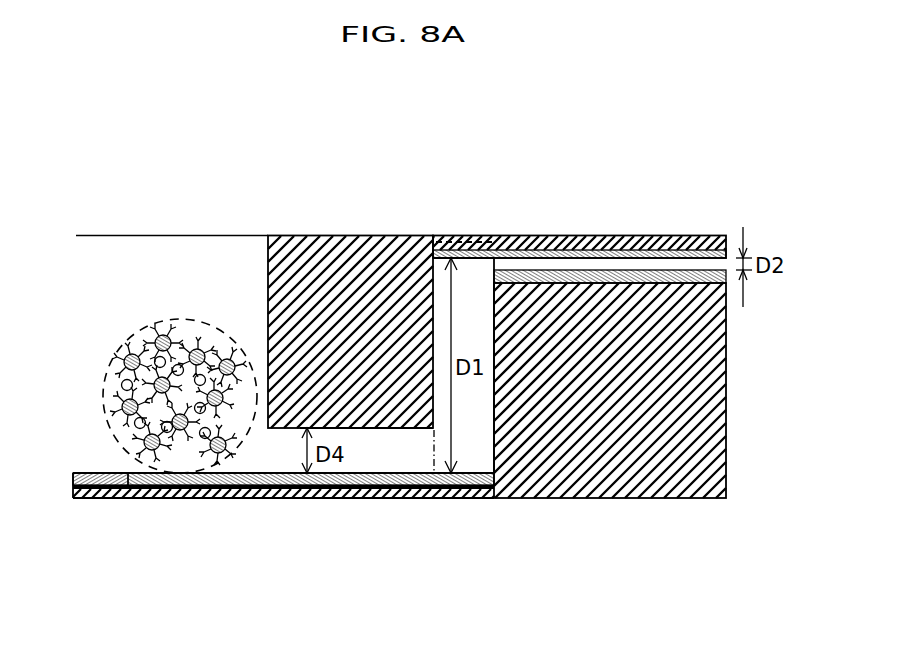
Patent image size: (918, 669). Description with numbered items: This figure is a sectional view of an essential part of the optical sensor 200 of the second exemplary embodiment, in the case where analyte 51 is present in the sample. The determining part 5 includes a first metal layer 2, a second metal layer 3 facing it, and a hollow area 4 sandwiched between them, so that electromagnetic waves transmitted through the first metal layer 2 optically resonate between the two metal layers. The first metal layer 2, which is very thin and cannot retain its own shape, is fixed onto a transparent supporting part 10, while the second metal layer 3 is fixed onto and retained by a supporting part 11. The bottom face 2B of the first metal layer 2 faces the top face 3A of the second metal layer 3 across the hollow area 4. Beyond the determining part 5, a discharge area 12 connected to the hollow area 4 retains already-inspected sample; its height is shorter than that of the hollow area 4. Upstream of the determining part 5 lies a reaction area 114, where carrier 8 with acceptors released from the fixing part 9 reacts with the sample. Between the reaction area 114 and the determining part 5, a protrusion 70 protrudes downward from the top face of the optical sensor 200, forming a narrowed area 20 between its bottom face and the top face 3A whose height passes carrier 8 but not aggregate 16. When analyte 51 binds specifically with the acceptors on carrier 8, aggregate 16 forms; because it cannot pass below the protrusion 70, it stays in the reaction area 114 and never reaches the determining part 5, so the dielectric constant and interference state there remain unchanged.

The reaction area 114 is at (182, 265).
The protrusion 70 is at (332, 265).
The bottom face 2B is at (458, 243).
The discharge area 12 is at (582, 268).
The supporting part 10 is at (628, 243).
The first metal layer 2 is at (700, 243).
The optical sensor 200 is at (423, 343).
The second metal layer 3 is at (693, 275).
The supporting part 11 is at (693, 393).
The aggregate 16 is at (138, 333).
The analyte 51 is at (124, 384).
The carrier 8 is at (124, 407).
The fixing part 9 is at (98, 488).
The top face 3A is at (235, 491).
The narrowed area 20 is at (382, 447).
The determining part 5 is at (432, 455).
The hollow area 4 is at (473, 452).